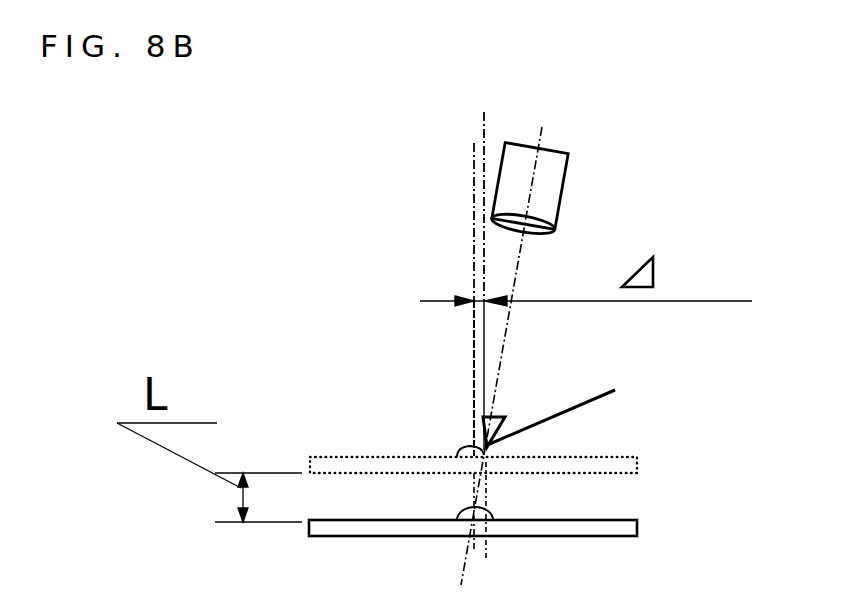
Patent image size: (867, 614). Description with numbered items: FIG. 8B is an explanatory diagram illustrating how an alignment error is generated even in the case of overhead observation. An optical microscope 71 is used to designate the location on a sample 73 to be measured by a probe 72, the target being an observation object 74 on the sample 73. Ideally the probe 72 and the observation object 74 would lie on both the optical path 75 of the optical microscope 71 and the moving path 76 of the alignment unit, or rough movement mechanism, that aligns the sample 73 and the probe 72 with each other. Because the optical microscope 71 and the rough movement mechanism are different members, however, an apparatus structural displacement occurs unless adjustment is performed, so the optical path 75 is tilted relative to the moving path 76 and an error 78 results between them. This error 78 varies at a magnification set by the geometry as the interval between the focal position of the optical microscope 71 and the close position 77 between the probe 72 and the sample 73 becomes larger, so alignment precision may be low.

The optical microscope 71 is at (552, 182).
The probe 72 is at (500, 428).
The sample 73 is at (385, 528).
The observation object 74 is at (483, 512).
The optical path 75 is at (502, 362).
The moving path 76 is at (483, 258).
The close position 77 is at (408, 456).
The error 78 is at (675, 258).